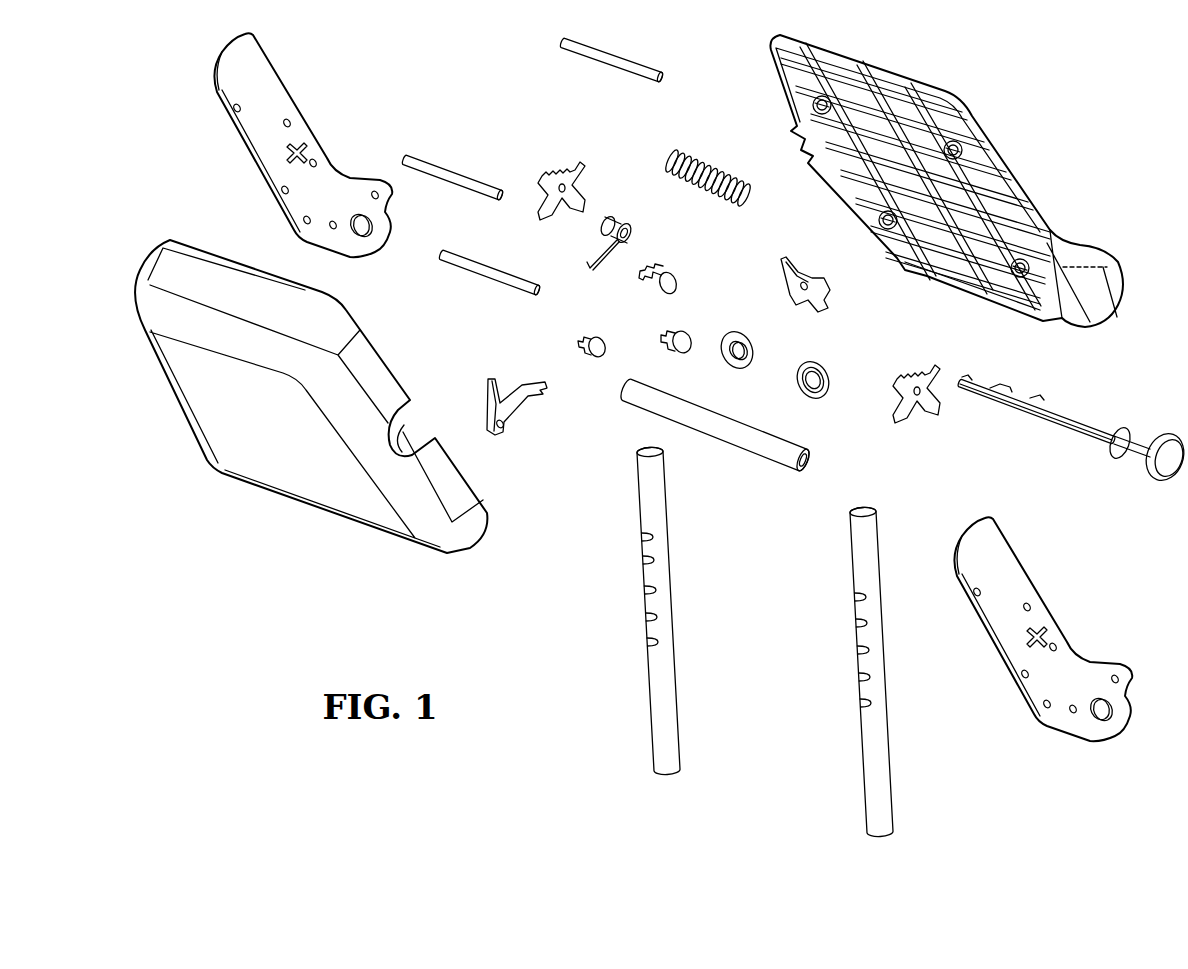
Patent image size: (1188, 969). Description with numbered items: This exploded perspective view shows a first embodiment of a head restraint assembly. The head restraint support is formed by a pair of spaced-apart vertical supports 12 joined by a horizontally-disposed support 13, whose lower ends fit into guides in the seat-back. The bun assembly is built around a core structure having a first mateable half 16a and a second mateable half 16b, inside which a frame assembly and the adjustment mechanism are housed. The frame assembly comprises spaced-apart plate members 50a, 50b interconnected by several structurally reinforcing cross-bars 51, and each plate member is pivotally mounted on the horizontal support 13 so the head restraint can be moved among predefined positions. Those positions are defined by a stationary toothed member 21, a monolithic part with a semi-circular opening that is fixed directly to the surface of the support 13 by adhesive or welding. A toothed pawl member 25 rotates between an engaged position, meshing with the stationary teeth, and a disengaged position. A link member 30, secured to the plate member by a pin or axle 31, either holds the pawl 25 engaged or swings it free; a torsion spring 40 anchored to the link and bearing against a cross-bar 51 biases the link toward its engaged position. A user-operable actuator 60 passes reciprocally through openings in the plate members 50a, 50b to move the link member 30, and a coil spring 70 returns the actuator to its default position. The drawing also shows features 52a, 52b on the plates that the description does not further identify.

The vertical supports 12 is at (642, 500).
The horizontally-disposed support 13 is at (760, 450).
The first mateable half 16a is at (1000, 163).
The second mateable half 16b is at (357, 502).
The stationary toothed member 21 is at (557, 163).
The toothed pawl member 25 is at (520, 378).
The link member 30 is at (797, 263).
The pin or axle 31 is at (677, 280).
The torsion spring 40 is at (628, 215).
The plate member 50a is at (995, 557).
The plate member 50b is at (275, 103).
The cross-bars 51 is at (633, 70).
The cross-shaped projection 52a is at (1047, 633).
The cross-shaped projection 52b is at (307, 147).
The actuator 60 is at (1107, 418).
The coil spring 70 is at (677, 158).